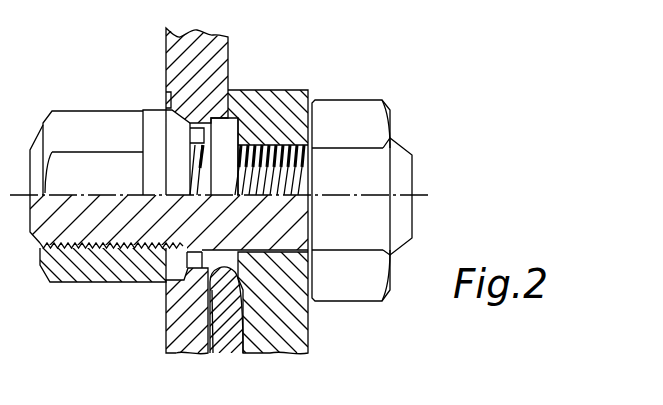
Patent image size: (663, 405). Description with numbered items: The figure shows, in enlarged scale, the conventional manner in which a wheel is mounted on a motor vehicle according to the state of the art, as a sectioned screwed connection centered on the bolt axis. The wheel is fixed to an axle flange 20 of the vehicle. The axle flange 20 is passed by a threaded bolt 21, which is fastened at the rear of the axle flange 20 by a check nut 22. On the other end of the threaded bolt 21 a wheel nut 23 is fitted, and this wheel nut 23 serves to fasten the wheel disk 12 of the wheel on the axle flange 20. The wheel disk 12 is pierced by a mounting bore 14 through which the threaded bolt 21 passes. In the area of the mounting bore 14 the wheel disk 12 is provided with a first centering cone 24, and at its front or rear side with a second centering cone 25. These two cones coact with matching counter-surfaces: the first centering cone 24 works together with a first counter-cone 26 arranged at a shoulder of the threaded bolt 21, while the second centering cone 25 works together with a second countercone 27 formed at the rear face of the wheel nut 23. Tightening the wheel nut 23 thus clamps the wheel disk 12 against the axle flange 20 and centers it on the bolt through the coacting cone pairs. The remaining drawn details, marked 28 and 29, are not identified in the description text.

The wheel disk 12 is at (183, 42).
The mounting bore 14 is at (227, 155).
The axle flange 20 is at (295, 113).
The threaded bolt 21 is at (291, 255).
The check nut 22 is at (377, 123).
The wheel nut 23 is at (65, 134).
The first centering cone 24 is at (178, 280).
The second centering cone 25 is at (210, 258).
The first counter-cone 26 is at (240, 300).
The second countercone 27 is at (165, 90).
The thread 28 is at (238, 152).
The flange 29 is at (155, 177).